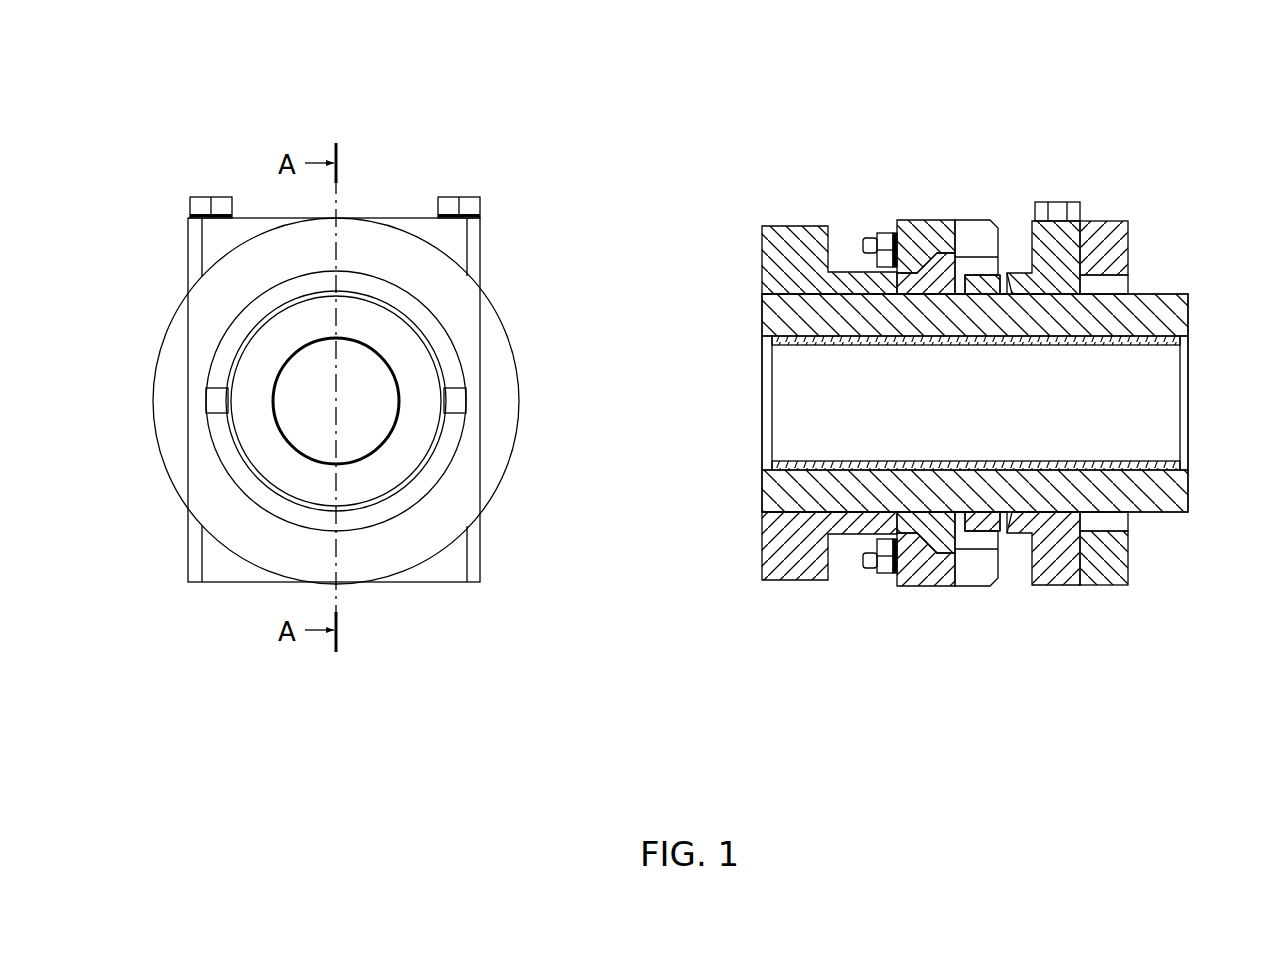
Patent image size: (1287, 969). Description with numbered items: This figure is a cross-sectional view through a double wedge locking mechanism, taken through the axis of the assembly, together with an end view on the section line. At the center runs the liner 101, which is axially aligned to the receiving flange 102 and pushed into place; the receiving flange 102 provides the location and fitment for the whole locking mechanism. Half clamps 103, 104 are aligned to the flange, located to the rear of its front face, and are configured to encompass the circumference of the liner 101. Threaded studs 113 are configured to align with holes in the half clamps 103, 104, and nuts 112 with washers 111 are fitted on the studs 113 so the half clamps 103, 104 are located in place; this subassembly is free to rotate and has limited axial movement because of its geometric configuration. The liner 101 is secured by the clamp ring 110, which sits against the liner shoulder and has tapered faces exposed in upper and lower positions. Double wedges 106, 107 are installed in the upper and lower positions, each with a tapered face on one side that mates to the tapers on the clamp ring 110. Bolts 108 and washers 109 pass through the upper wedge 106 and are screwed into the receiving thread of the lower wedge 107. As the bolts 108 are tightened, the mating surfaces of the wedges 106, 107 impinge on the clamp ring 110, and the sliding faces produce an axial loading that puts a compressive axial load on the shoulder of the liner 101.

The liner 101 is at (908, 403).
The receiving flange 102 is at (814, 253).
The half clamp 103 is at (942, 192).
The half clamp 104 is at (881, 603).
The upper wedge 106 is at (1128, 230).
The lower wedge 107 is at (1093, 594).
The bolt 108 is at (1142, 141).
The washer 109 is at (1165, 193).
The clamp ring 110 is at (1045, 474).
The washer 111 is at (843, 148).
The nut 112 is at (837, 182).
The stud 113 is at (821, 203).